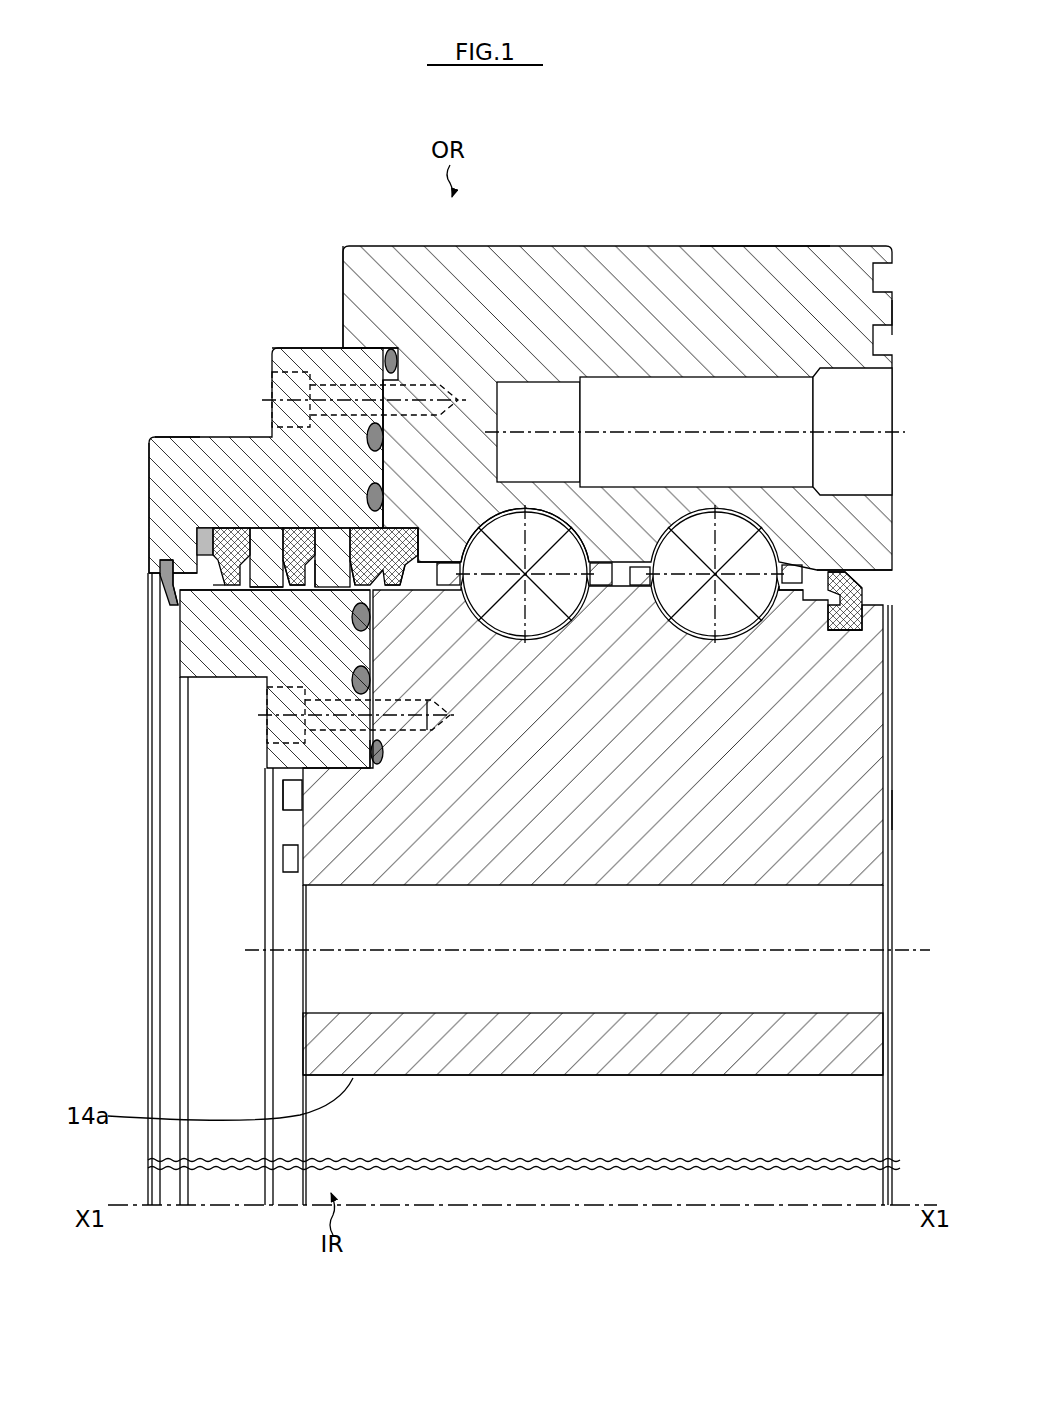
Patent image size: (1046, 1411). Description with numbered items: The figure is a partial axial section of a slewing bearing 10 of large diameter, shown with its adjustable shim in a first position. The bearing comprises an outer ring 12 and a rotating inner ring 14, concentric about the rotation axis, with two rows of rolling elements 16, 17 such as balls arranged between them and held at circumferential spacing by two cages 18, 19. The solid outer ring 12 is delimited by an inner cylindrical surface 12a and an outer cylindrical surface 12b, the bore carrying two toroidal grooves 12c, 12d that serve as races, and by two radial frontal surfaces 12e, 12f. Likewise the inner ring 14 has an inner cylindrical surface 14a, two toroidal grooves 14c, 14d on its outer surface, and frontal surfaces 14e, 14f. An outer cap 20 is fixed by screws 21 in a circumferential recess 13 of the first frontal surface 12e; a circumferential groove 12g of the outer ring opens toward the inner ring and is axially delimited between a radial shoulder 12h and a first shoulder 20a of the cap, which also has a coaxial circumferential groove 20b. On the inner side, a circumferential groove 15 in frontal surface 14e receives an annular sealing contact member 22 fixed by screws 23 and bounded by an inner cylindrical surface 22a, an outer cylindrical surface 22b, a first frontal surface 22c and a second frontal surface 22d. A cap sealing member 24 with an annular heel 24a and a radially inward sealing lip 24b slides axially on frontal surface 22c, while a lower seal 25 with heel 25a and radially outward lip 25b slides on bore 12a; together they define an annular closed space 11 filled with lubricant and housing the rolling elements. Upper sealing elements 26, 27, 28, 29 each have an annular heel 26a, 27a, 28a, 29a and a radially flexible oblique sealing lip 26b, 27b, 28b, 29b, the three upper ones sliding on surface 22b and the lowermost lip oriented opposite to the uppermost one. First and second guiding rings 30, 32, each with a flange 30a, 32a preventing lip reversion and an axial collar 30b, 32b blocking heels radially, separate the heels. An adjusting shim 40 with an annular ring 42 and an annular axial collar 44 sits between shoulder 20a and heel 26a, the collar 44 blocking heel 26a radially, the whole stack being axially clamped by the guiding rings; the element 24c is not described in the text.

The slewing bearing 10 is at (898, 200).
The annular closed space 11 is at (640, 566).
The outer ring 12 is at (680, 293).
The inner cylindrical surface 12a is at (890, 570).
The outer cylindrical surface 12b is at (763, 246).
The toroidal groove 12c is at (540, 515).
The toroidal groove 12d is at (820, 493).
The first frontal surface 12e is at (335, 248).
The second frontal surface 12f is at (896, 312).
The circumferential groove 12g is at (397, 522).
The radial shoulder 12h is at (420, 520).
The circumferential recess 13 is at (357, 357).
The inner ring 14 is at (850, 770).
The inner cylindrical surface 14a is at (790, 590).
The toroidal groove 14c is at (563, 613).
The toroidal groove 14d is at (778, 595).
The first frontal surface 14e is at (297, 805).
The second frontal surface 14f is at (896, 810).
The circumferential groove 15 is at (185, 700).
The rolling elements 16 is at (490, 549).
The rolling elements 17 is at (680, 549).
The cage 18 is at (600, 562).
The cage 19 is at (800, 565).
The outer cap 20 is at (146, 473).
The first shoulder 20a is at (193, 542).
The circumferential groove 20b is at (355, 470).
The screws 21 is at (330, 397).
The annular sealing contact member 22 is at (230, 640).
The inner cylindrical surface 22a is at (335, 770).
The outer cylindrical surface 22b is at (235, 595).
The first frontal surface 22c is at (255, 600).
The second frontal surface 22d is at (385, 738).
The screws 23 is at (300, 700).
The cap sealing member 24 is at (168, 595).
The annular heel 24a is at (172, 578).
The sealing lip 24b is at (175, 605).
The seal lip portion 24c is at (165, 560).
The lower seal 25 is at (868, 603).
The annular heel 25a is at (845, 582).
The sealing lip 25b is at (848, 618).
The uppermost sealing element 26 is at (380, 527).
The annular heel 26a is at (152, 440).
The sealing lip 26b is at (225, 588).
The first intermediate sealing element 27 is at (335, 527).
The annular heel 27a is at (290, 540).
The sealing lip 27b is at (310, 590).
The second intermediate sealing element 28 is at (297, 524).
The annular heel 28a is at (258, 524).
The sealing lip 28b is at (290, 600).
The lowermost sealing element 29 is at (370, 524).
The annular heel 29a is at (323, 524).
The sealing lip 29b is at (370, 600).
The first guiding ring 30 is at (333, 527).
The flange 30a is at (270, 592).
The annular axial collar 30b is at (295, 592).
The second guiding ring 32 is at (230, 524).
The flange 32a is at (340, 592).
The annular axial collar 32b is at (360, 592).
The adjusting shim 40 is at (240, 545).
The annular ring 42 is at (250, 527).
The annular axial collar 44 is at (205, 560).